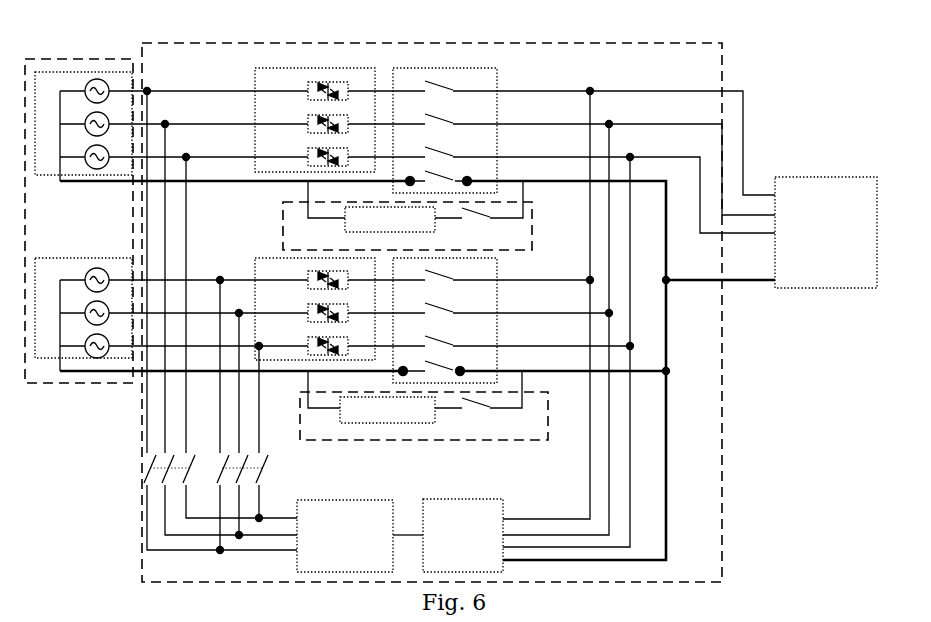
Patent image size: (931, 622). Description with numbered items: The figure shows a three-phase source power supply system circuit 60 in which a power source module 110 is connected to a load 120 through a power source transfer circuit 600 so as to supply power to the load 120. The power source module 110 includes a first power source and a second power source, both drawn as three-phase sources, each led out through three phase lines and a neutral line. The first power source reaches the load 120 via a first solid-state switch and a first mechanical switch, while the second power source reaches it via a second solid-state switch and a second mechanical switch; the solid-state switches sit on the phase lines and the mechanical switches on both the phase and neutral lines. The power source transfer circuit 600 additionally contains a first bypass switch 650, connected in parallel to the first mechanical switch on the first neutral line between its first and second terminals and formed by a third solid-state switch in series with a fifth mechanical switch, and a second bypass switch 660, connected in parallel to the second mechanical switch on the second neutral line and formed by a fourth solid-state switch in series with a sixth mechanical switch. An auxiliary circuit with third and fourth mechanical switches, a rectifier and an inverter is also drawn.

The three-phase source power supply system circuit 60 is at (866, 581).
The power source module 110 is at (82, 57).
The load 120 is at (820, 177).
The power source transfer circuit 600 is at (744, 418).
The first bypass switch 650 is at (283, 220).
The second bypass switch 660 is at (300, 410).